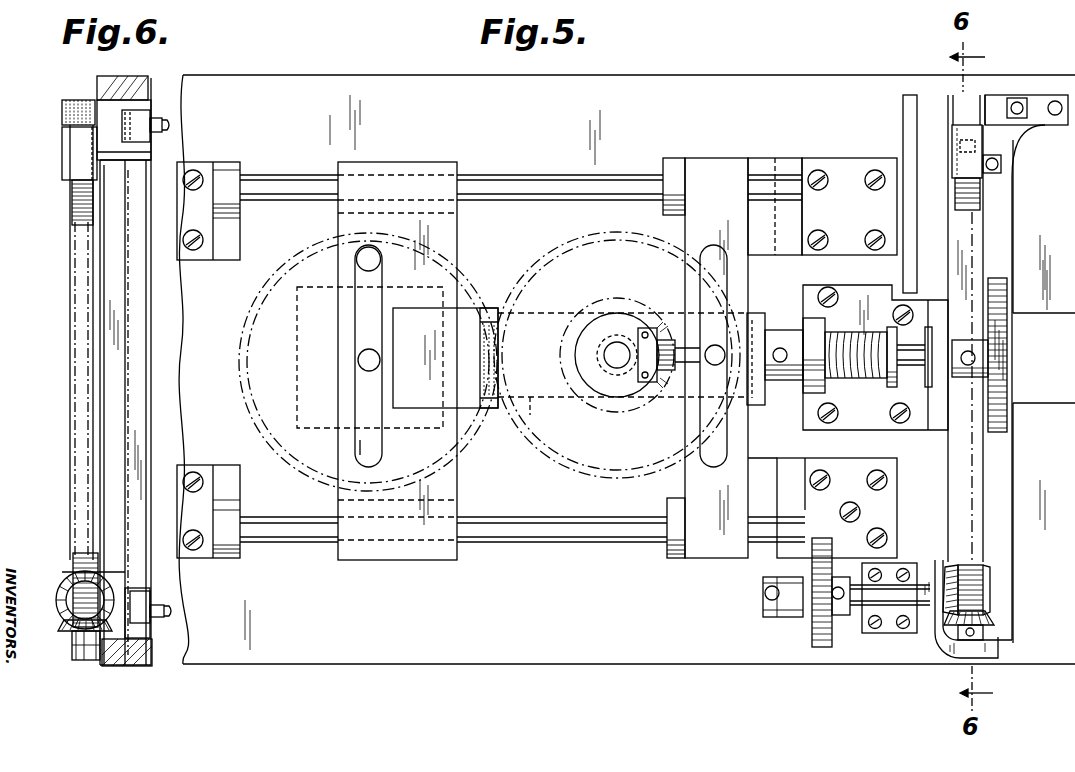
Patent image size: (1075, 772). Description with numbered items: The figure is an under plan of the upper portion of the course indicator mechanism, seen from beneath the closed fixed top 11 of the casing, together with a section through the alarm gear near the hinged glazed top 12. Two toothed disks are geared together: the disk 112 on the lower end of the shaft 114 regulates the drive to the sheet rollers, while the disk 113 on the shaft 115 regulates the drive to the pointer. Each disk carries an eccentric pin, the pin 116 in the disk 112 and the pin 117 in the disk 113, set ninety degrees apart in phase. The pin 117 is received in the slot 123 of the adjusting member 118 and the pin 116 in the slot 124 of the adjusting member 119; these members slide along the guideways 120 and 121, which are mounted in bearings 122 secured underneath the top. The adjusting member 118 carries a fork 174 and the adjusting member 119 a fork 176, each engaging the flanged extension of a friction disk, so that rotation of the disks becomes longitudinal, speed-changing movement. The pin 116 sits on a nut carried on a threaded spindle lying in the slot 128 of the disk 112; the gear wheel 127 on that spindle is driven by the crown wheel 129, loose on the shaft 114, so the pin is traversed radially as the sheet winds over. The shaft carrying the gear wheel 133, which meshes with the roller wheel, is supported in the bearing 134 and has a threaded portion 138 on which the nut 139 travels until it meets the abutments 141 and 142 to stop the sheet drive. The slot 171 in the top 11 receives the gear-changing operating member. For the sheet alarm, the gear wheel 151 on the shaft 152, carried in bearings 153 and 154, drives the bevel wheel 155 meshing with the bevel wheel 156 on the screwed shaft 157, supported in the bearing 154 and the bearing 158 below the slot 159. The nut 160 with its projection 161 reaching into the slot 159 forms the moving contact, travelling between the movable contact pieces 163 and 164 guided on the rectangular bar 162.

In FIG. 5, the closed fixed top 11 is at (627, 369).
In FIG. 6, the hinged glazed top 12 is at (122, 660).
In FIG. 5, the disk 112 is at (546, 260).
In FIG. 5, the disk 113 is at (232, 318).
In FIG. 5, the shaft 114 is at (608, 355).
In FIG. 5, the shaft 115 is at (362, 358).
In FIG. 5, the pin 116 is at (718, 365).
In FIG. 5, the pin 117 is at (360, 268).
In FIG. 5, the adjusting member 118 is at (395, 550).
In FIG. 5, the adjusting member 119 is at (710, 550).
In FIG. 5, the guideway 120 is at (288, 530).
In FIG. 5, the guideway 121 is at (270, 190).
In FIG. 5, the bearings 122 is at (202, 252).
In FIG. 5, the slot 123 is at (355, 452).
In FIG. 5, the slot 124 is at (698, 430).
In FIG. 5, the gear wheel 127 is at (642, 387).
In FIG. 5, the slot 128 is at (677, 370).
In FIG. 5, the crown wheel 129 is at (634, 318).
In FIG. 5, the gear wheel 133 is at (1000, 360).
In FIG. 5, the bearing 134 is at (569, 371).
In FIG. 5, the threaded portion 138 is at (867, 378).
In FIG. 5, the nut 139 is at (805, 320).
In FIG. 5, the abutment 141 is at (793, 357).
In FIG. 5, the abutment 142 is at (889, 382).
In FIG. 5, the gear wheel 151 is at (817, 650).
In FIG. 5, the shaft 152 is at (892, 595).
In FIG. 5, the bearing 153 is at (790, 608).
In FIG. 5, the bearing 154 is at (935, 645).
In FIG. 6, the bevel wheel 155 is at (67, 585).
In FIG. 5, the bevel wheel 155 is at (957, 575).
In FIG. 6, the bevel wheel 156 is at (68, 628).
In FIG. 5, the bevel wheel 156 is at (993, 615).
In FIG. 6, the screwed shaft 157 is at (78, 237).
In FIG. 5, the screwed shaft 157 is at (975, 196).
In FIG. 5, the bearing 158 is at (997, 102).
In FIG. 6, the slot 159 is at (105, 270).
In FIG. 6, the nut 160 is at (68, 130).
In FIG. 6, the projection 161 is at (105, 153).
In FIG. 6, the rectangular bar 162 is at (130, 305).
In FIG. 6, the movable contact piece 163 is at (122, 86).
In FIG. 6, the movable contact piece 164 is at (147, 645).
In FIG. 5, the slot 171 is at (903, 99).
In FIG. 5, the fork 174 is at (486, 325).
In FIG. 5, the fork 176 is at (760, 313).